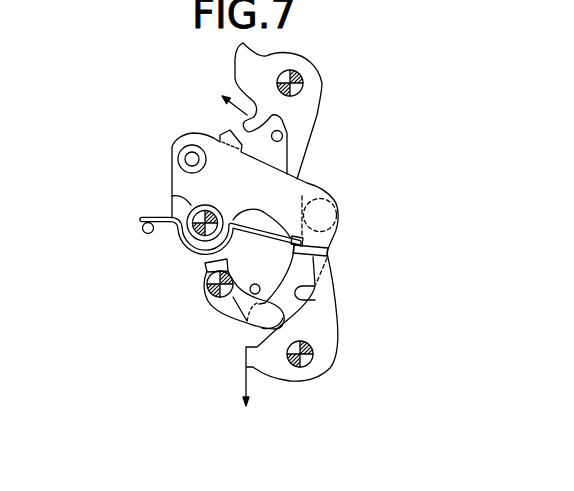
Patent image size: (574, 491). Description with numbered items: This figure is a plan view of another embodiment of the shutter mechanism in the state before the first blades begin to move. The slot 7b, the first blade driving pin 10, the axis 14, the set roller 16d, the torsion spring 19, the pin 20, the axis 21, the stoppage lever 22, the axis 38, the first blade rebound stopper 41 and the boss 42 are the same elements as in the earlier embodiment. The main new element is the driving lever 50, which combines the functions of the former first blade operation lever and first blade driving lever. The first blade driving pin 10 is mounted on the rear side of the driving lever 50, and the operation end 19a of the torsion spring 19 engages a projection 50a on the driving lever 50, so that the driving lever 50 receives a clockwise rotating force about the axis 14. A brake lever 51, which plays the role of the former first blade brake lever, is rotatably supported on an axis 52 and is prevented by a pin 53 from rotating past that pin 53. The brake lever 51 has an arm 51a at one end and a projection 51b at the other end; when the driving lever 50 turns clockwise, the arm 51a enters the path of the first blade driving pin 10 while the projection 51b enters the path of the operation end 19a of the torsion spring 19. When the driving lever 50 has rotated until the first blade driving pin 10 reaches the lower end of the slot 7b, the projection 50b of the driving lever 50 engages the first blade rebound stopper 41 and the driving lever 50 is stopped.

The slot 7b is at (318, 293).
The first blade driving pin 10 is at (327, 215).
The axis 14 is at (195, 212).
The set roller 16d is at (178, 157).
The torsion spring 19 is at (142, 219).
The operation end 19a is at (314, 223).
The pin 20 is at (146, 232).
The axis 21 is at (312, 359).
The stoppage lever 22 is at (338, 328).
The axis 38 is at (304, 82).
The first blade rebound stopper 41 is at (324, 104).
The boss 42 is at (283, 136).
The driving lever 50 is at (172, 181).
The projection 50a is at (329, 252).
The projection 50b is at (222, 132).
The brake lever 51 is at (228, 316).
The arm 51a is at (248, 327).
The projection 51b is at (206, 264).
The axis 52 is at (207, 287).
The pin 53 is at (250, 291).